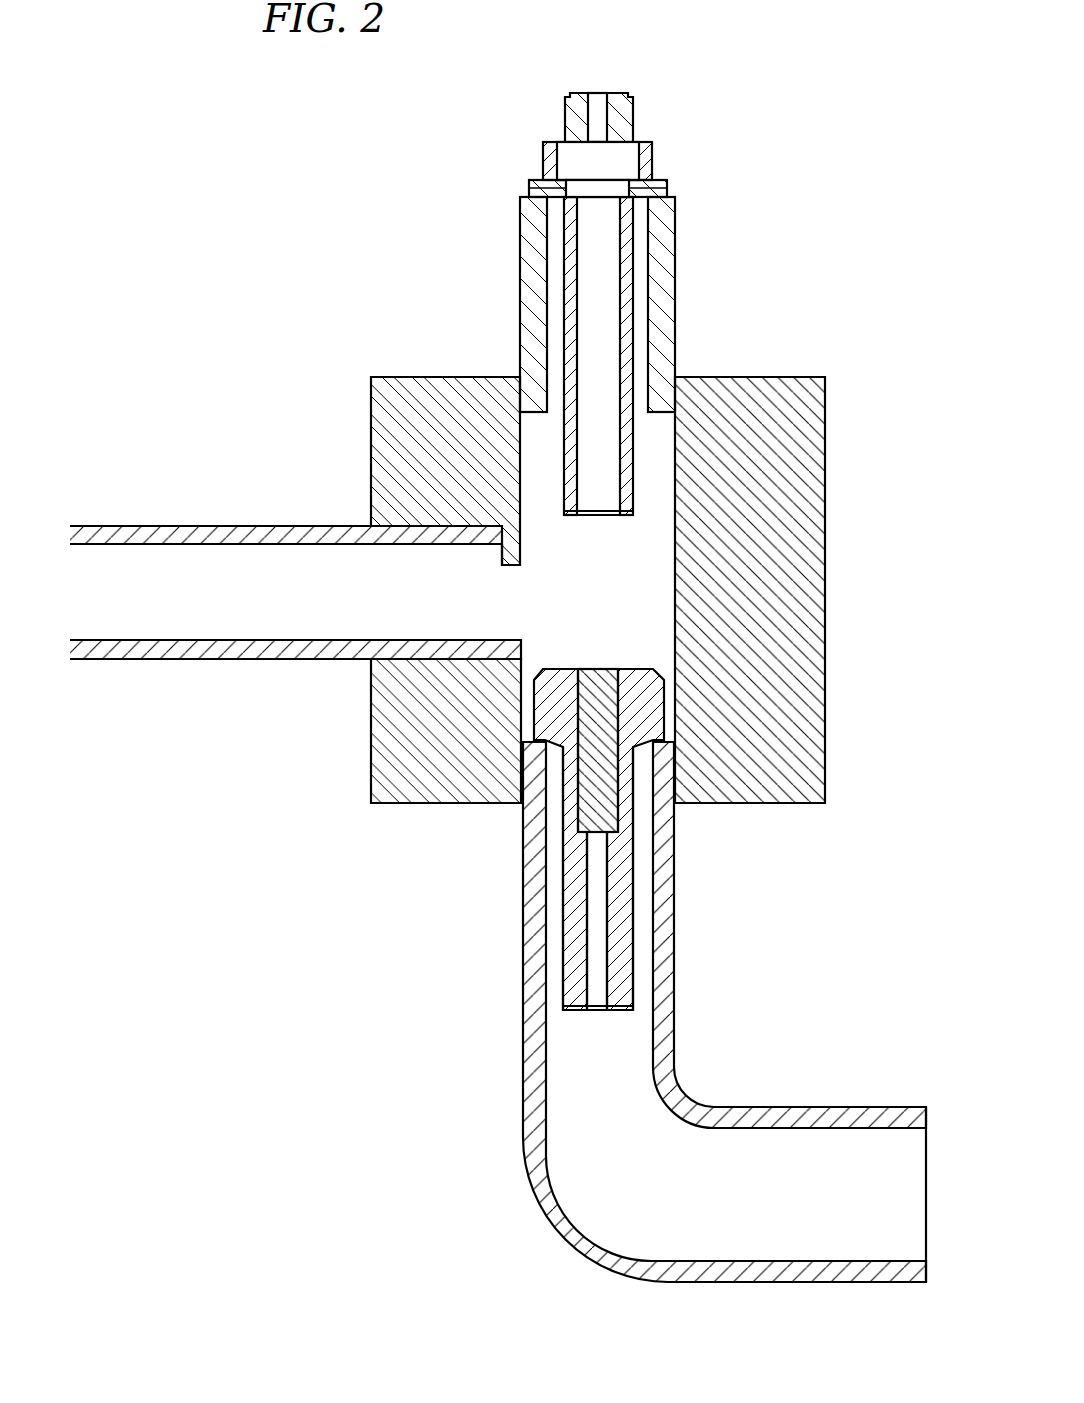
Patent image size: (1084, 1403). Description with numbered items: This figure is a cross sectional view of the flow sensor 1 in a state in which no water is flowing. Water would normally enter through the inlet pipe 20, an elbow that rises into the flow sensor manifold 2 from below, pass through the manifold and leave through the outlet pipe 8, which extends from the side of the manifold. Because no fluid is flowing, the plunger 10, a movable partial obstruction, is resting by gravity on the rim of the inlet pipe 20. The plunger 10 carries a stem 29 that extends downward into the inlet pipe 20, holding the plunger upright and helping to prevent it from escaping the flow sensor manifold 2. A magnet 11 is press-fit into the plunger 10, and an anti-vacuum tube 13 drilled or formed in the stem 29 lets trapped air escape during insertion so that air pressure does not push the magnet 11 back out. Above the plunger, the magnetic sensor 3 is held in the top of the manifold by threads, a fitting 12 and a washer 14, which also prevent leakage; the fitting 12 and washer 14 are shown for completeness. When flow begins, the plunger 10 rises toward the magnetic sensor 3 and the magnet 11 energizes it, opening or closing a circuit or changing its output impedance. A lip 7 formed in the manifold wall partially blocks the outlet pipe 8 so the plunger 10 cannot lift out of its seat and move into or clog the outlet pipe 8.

The flow sensor 1 is at (808, 140).
The flow sensor manifold 2 is at (825, 418).
The magnetic sensor 3 is at (543, 153).
The lip 7 is at (502, 560).
The outlet pipe 8 is at (180, 525).
The plunger 10 is at (560, 668).
The magnet 11 is at (600, 669).
The fitting 12 is at (520, 283).
The anti-vacuum tube 13 is at (597, 1010).
The washer 14 is at (667, 190).
The inlet pipe 20 is at (676, 985).
The stem 29 is at (633, 892).